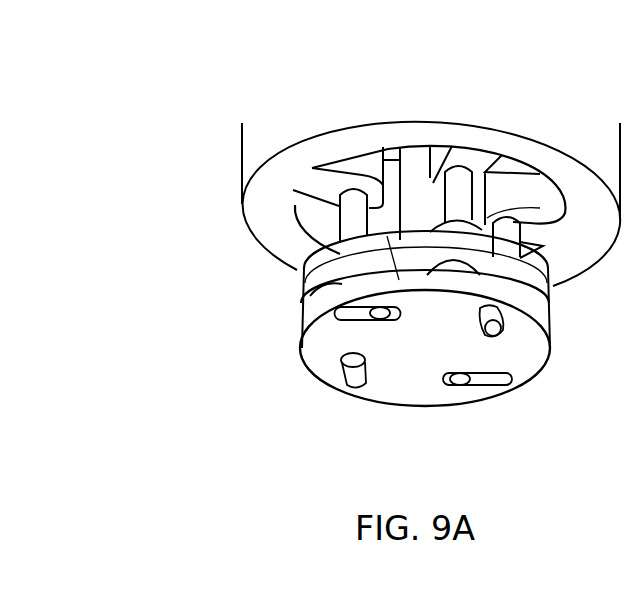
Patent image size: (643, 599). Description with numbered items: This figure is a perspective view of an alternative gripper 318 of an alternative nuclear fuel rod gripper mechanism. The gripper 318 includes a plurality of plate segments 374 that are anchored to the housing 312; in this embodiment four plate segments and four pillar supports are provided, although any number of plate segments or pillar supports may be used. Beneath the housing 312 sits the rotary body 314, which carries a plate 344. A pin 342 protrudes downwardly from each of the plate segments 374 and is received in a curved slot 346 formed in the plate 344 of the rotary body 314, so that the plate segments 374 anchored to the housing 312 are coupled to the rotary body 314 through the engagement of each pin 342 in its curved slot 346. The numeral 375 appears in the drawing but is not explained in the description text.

The housing 312 is at (568, 137).
The rotary body 314 is at (412, 178).
The gripper 318 is at (258, 357).
The pin 342 is at (340, 367).
The plate 344 is at (430, 393).
The curved slot 346 is at (505, 385).
The plate segment 374 is at (313, 270).
The post 375 is at (350, 218).